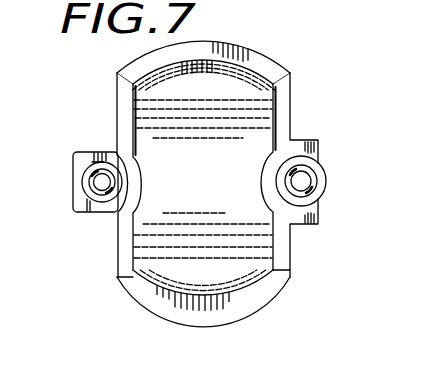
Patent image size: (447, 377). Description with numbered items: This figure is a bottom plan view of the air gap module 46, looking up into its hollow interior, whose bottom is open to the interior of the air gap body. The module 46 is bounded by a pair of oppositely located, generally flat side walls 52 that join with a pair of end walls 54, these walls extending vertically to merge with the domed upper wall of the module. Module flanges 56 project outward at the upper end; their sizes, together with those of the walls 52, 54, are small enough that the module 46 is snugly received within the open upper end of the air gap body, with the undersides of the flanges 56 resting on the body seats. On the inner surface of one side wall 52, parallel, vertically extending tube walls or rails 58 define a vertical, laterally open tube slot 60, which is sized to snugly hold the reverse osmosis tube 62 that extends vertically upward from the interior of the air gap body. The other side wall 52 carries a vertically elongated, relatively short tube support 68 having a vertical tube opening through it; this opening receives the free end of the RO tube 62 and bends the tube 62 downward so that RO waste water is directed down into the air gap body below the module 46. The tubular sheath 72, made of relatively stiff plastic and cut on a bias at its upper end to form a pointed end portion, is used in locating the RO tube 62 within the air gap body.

The air gap module 46 is at (220, 326).
The side walls 52 is at (281, 110).
The end walls 54 is at (256, 77).
The module flanges 56 is at (250, 50).
The tube walls or rails 58 is at (315, 138).
The tube slot 60 is at (321, 157).
The reverse osmosis (RO) tube 62 is at (320, 182).
The tube support 68 is at (73, 197).
The tubular sheath 72 is at (324, 197).